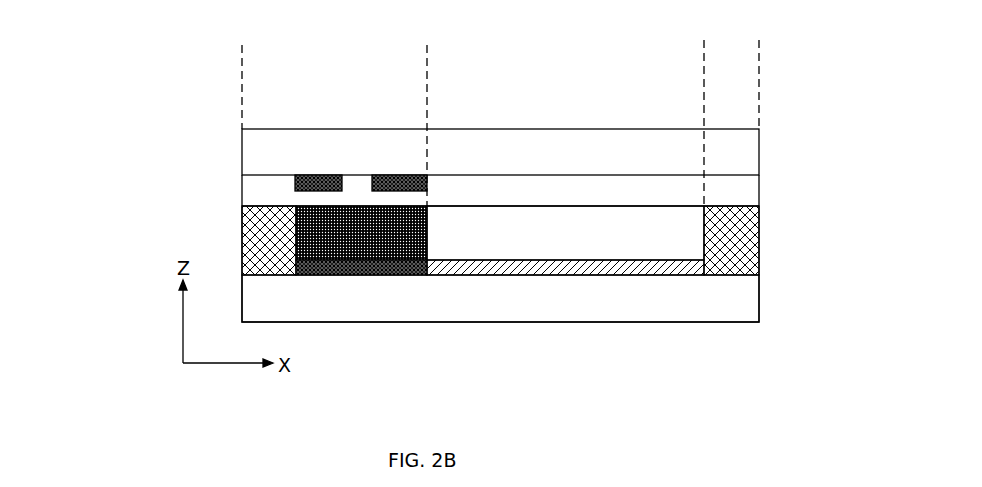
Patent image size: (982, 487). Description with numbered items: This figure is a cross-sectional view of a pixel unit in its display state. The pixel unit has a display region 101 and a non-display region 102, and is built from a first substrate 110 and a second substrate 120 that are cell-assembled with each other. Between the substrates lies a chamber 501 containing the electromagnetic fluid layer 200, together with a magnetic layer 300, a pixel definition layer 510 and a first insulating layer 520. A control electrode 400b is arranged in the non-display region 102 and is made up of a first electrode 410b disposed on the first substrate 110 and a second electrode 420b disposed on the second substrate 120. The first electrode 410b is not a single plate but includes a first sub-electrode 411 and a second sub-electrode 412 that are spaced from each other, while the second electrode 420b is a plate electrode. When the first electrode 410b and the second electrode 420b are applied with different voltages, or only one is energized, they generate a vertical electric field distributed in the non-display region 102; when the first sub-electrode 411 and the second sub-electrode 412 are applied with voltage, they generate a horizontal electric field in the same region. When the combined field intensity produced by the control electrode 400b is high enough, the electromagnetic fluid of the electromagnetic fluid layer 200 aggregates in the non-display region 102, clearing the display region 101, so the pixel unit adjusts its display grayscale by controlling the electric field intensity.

The display region 101 is at (698, 70).
The non-display region 102 is at (421, 60).
The first substrate 110 is at (457, 160).
The second substrate 120 is at (512, 298).
The electromagnetic fluid layer 200 is at (383, 250).
The magnetic layer 300 is at (587, 270).
The control electrode 400b is at (90, 83).
The first electrode 410b is at (160, 58).
The first sub-electrode 411 is at (320, 186).
The second sub-electrode 412 is at (385, 186).
The second electrode 420b is at (298, 266).
The chamber 501 is at (540, 218).
The pixel definition layer 510 is at (265, 247).
The first insulating layer 520 is at (748, 197).